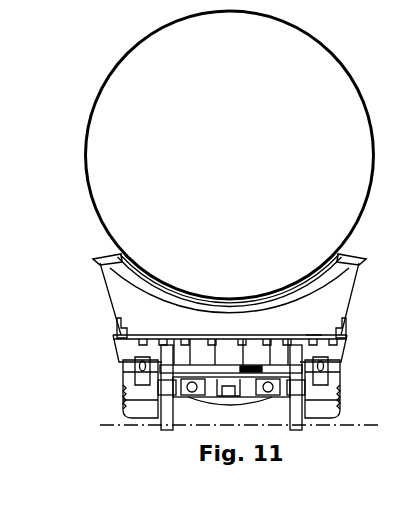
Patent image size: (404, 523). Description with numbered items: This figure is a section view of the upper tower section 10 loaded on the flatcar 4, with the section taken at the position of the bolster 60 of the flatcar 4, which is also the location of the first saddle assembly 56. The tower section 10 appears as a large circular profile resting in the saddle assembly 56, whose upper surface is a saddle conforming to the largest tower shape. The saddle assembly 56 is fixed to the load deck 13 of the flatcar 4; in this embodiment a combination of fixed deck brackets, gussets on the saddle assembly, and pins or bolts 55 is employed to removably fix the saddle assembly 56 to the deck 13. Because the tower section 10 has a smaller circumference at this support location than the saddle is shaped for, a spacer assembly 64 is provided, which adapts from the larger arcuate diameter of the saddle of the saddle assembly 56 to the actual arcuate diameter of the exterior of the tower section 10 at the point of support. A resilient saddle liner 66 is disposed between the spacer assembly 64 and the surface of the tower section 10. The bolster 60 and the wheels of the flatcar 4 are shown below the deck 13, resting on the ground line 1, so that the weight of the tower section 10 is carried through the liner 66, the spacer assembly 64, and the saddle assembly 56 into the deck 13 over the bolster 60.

The ground surface 1 is at (104, 424).
The flatcar 4 is at (115, 356).
The upper tower section 10 is at (313, 38).
The load deck 13 is at (313, 328).
The pins or bolts 55 is at (118, 330).
The first saddle assembly 56 is at (108, 300).
The bolster 60 is at (342, 385).
The spacer assembly 64 is at (323, 290).
The resilient saddle liner 66 is at (112, 255).